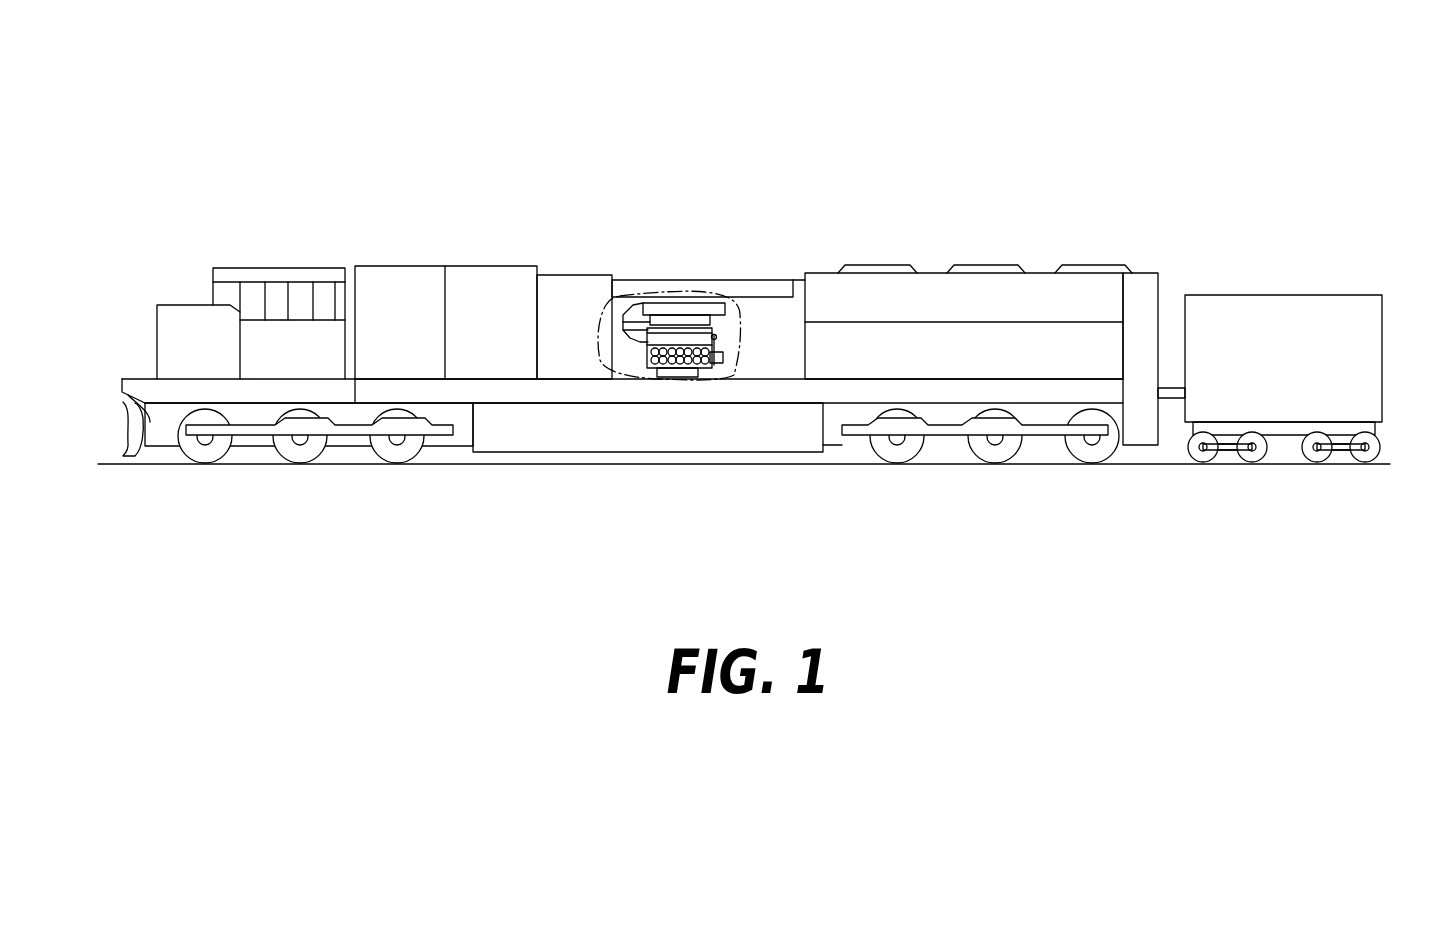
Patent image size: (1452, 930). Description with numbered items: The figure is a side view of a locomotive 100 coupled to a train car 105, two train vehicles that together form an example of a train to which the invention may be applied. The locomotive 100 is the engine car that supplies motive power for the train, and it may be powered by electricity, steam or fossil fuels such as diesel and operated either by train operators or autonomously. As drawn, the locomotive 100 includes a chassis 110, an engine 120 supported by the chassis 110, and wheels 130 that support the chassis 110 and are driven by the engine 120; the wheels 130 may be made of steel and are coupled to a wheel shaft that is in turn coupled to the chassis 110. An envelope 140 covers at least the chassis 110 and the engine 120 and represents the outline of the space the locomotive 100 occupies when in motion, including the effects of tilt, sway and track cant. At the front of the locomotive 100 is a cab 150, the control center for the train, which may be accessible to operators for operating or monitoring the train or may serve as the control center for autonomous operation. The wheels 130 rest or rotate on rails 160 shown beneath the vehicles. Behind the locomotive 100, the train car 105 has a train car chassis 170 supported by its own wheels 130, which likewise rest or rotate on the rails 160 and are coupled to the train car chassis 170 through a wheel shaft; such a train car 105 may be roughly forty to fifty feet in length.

The locomotive 100 is at (657, 245).
The train car 105 is at (1315, 283).
The chassis 110 is at (152, 423).
The engine 120 is at (718, 304).
The wheels 130 is at (197, 461).
The envelope 140 is at (577, 275).
The cab 150 is at (280, 268).
The rails 160 is at (533, 466).
The train car chassis 170 is at (1335, 428).